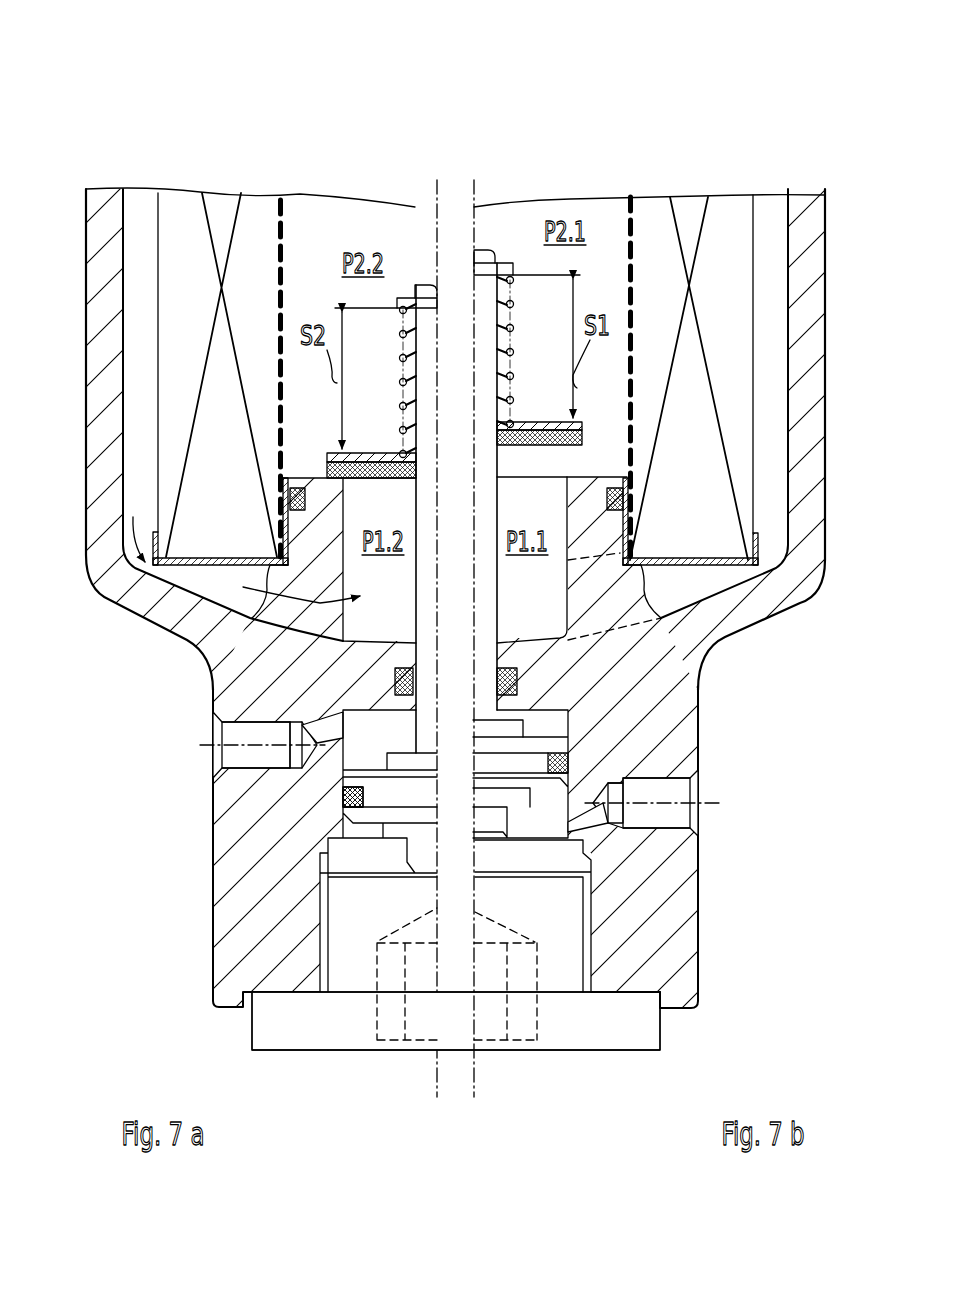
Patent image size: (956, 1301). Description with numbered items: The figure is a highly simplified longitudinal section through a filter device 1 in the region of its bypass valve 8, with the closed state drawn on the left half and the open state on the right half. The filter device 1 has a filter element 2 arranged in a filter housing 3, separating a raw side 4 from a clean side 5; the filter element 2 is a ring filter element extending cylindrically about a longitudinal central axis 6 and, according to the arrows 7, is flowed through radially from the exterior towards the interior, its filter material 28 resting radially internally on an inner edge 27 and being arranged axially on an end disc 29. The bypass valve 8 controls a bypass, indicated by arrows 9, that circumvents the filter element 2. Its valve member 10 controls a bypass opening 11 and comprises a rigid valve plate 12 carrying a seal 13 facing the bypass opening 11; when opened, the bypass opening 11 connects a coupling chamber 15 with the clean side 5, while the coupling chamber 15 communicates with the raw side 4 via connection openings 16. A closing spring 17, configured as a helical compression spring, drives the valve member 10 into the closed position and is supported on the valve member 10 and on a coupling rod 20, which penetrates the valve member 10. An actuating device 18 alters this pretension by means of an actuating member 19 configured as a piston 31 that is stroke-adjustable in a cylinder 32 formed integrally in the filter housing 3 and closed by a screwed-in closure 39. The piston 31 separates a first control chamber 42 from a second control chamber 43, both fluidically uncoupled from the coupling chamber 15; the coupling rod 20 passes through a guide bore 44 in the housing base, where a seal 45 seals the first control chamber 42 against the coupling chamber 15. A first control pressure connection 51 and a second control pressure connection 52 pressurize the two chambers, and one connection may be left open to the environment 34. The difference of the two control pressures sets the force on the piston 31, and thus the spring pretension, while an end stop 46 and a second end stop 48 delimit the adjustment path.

In FIG. 7a, the filter device 1 is at (203, 120).
In FIG. 7b, the filter element 2 is at (760, 228).
In FIG. 7a, the filter housing 3 is at (97, 262).
In FIG. 7a, the raw side 4 is at (145, 350).
In FIG. 7a, the clean side 5 is at (385, 230).
In FIG. 7a, the longitudinal central axis 6 is at (433, 193).
In FIG. 7b, the longitudinal central axis 6 is at (478, 193).
In FIG. 7a, the arrows 7 is at (292, 373).
In FIG. 7b, the arrows 7 is at (618, 375).
In FIG. 7a, the bypass valve 8 is at (363, 900).
In FIG. 7a, the arrows 9 is at (85, 588).
In FIG. 7b, the arrows 9 is at (585, 452).
In FIG. 7a, the valve member 10 is at (373, 445).
In FIG. 7b, the bypass opening 11 is at (530, 478).
In FIG. 7b, the valve plate 12 is at (548, 428).
In FIG. 7b, the seal 13 is at (586, 442).
In FIG. 7a, the coupling chamber 15 is at (379, 590).
In FIG. 7a, the connection openings 16 is at (188, 652).
In FIG. 7a, the closing spring 17 is at (408, 381).
In FIG. 7b, the closing spring 17 is at (507, 342).
In FIG. 7b, the actuating device 18 is at (489, 850).
In FIG. 7a, the actuating member 19 is at (350, 780).
In FIG. 7b, the coupling rod 20 is at (480, 600).
In FIG. 7b, the inner edge 27 is at (630, 236).
In FIG. 7b, the filter material 28 is at (688, 220).
In FIG. 7a, the end disc 29 is at (138, 620).
In FIG. 7a, the piston 31 is at (353, 797).
In FIG. 7a, the cylinder 32 is at (345, 500).
In FIG. 7a, the environment 34 is at (266, 848).
In FIG. 7b, the environment 34 is at (799, 797).
In FIG. 7a, the closure 39 is at (456, 1021).
In FIG. 7b, the closure 39 is at (610, 1040).
In FIG. 7a, the first control chamber 42 is at (357, 745).
In FIG. 7b, the second control chamber 43 is at (529, 827).
In FIG. 7a, the guide bore 44 is at (404, 681).
In FIG. 7b, the guide bore 44 is at (497, 703).
In FIG. 7b, the seal 45 is at (520, 695).
In FIG. 7a, the end stop 46 is at (423, 872).
In FIG. 7b, the second end stop 48 is at (512, 718).
In FIG. 7a, the first control pressure connection 51 is at (205, 742).
In FIG. 7b, the second control pressure connection 52 is at (680, 815).